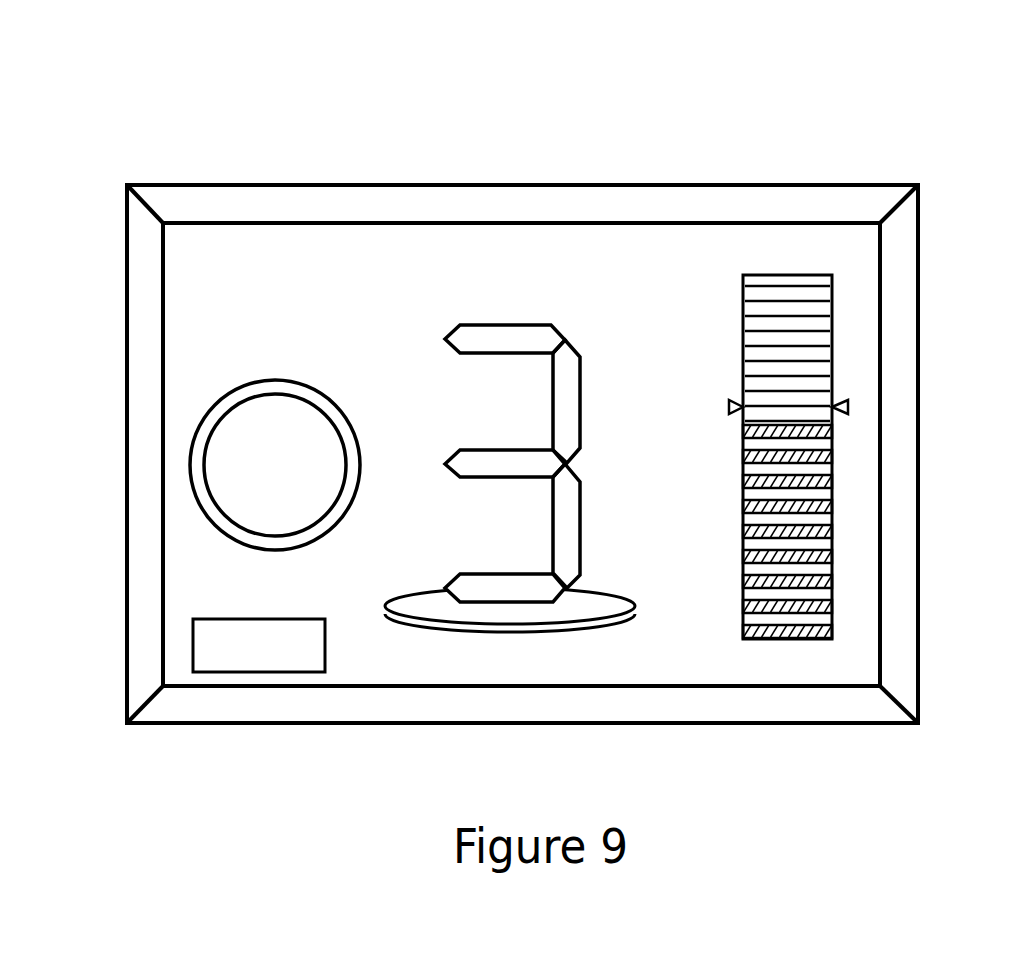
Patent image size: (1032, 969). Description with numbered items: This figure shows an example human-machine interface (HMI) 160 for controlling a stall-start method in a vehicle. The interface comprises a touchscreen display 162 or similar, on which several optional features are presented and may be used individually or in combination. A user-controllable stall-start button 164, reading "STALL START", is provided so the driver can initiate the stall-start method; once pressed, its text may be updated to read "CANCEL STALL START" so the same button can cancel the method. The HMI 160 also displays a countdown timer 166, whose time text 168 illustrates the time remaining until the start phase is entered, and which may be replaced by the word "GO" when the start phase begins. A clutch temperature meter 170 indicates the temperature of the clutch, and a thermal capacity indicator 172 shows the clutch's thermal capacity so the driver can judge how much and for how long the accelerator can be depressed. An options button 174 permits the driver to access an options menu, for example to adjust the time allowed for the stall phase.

The human-machine interface (HMI) 160 is at (805, 147).
The touchscreen display 162 is at (853, 269).
The stall-start button 164 is at (259, 410).
The countdown timer 166 is at (501, 313).
The time text 168 is at (530, 342).
The clutch temperature meter 170 is at (843, 473).
The thermal capacity indicator 172 is at (848, 407).
The options button 174 is at (259, 657).